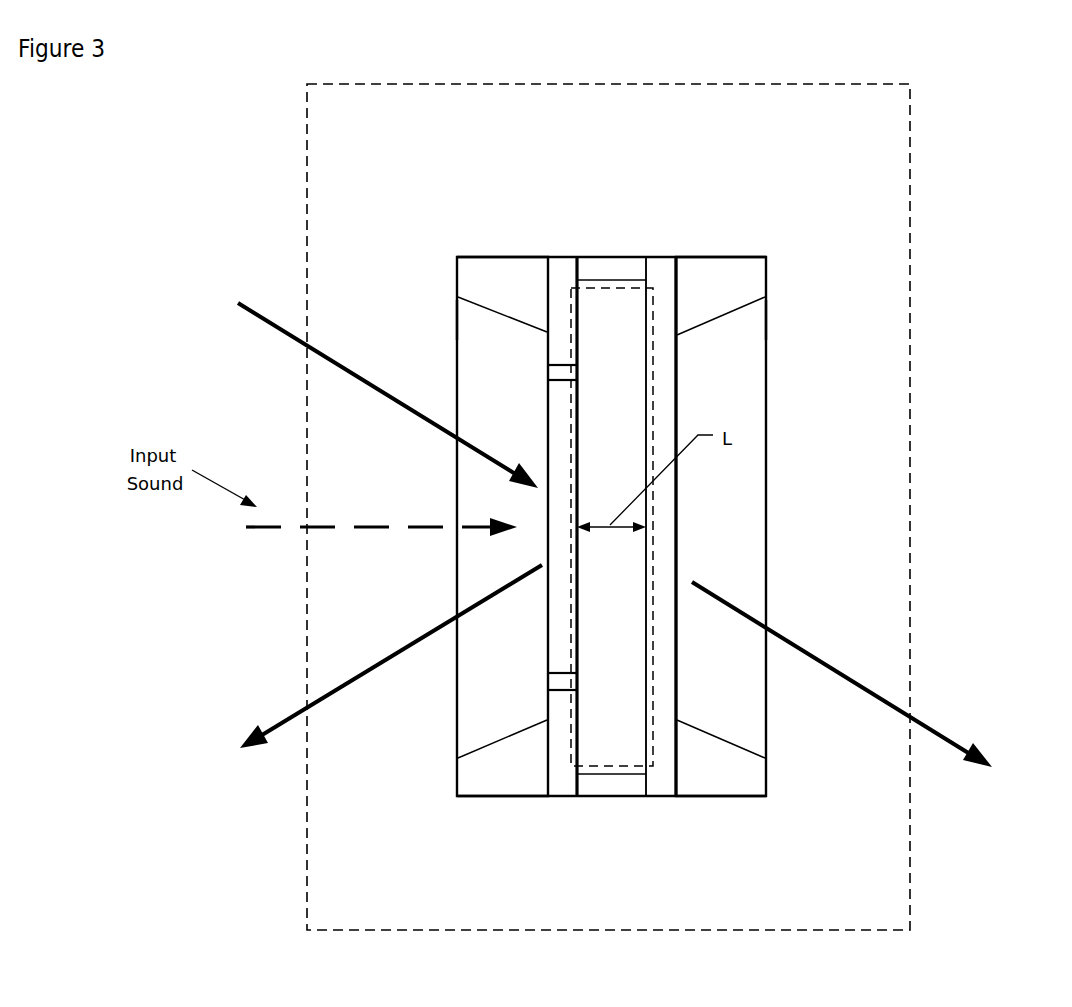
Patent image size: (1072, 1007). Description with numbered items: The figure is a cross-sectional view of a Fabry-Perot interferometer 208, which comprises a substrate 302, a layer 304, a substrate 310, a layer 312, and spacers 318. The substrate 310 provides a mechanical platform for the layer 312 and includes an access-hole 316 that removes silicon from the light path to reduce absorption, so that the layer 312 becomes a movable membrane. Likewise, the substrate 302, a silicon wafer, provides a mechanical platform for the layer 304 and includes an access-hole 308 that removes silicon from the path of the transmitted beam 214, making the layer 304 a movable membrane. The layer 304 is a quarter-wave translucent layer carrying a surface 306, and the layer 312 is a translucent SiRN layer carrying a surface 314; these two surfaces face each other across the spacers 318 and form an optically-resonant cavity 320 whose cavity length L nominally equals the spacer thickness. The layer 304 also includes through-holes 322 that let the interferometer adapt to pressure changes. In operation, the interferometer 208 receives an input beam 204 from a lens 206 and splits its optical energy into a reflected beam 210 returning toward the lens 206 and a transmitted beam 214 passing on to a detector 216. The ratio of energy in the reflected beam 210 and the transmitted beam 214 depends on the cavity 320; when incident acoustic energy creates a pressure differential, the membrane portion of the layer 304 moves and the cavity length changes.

The Fabry-Perot interferometer 208 is at (597, 120).
The substrate 302 is at (757, 292).
The layer 304 is at (662, 265).
The surface 306 is at (653, 437).
The access-hole 308 is at (758, 320).
The substrate 310 is at (501, 292).
The layer 312 is at (565, 265).
The surface 314 is at (568, 440).
The access-hole 316 is at (465, 320).
The spacers 318 is at (608, 265).
The optically-resonant cavity 320 is at (570, 757).
The through-holes 322 is at (555, 373).
The input beam 204 is at (275, 328).
The lens 206 is at (210, 510).
The reflected beam 210 is at (275, 725).
The transmitted beam 214 is at (820, 658).
The detector 216 is at (1022, 800).